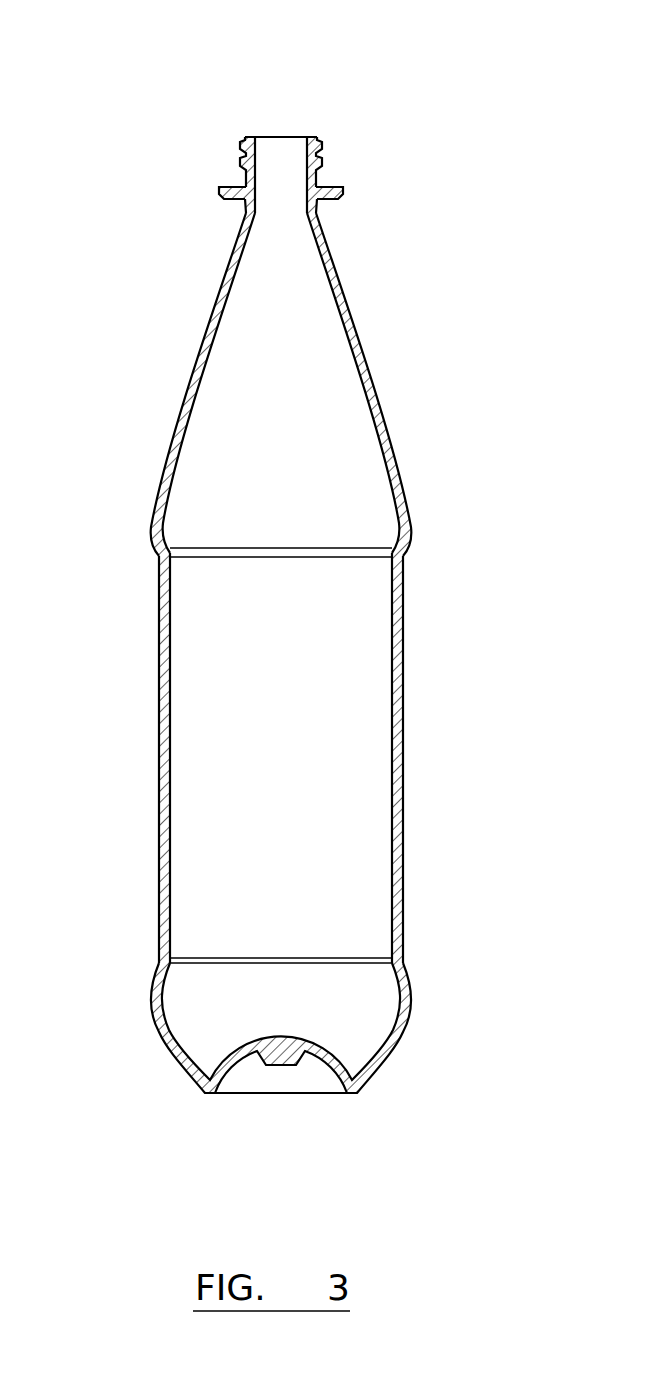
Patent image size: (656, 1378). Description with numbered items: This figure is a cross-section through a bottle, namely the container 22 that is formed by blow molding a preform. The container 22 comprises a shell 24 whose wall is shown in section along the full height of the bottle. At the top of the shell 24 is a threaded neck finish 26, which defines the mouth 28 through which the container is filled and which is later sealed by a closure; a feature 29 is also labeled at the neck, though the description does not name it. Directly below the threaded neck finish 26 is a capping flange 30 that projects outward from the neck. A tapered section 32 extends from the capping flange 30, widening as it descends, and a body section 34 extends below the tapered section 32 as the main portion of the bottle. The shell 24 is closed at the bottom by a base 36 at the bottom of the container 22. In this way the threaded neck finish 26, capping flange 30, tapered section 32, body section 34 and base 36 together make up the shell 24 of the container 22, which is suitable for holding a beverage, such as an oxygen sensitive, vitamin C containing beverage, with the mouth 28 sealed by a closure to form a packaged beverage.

The container 22 is at (402, 466).
The shell 24 is at (405, 682).
The threaded neck finish 26 is at (321, 160).
The mouth 28 is at (281, 135).
The inner neck wall 29 is at (310, 135).
The capping flange 30 is at (343, 191).
The tapered section 32 is at (199, 324).
The body section 34 is at (159, 803).
The base 36 is at (277, 1072).